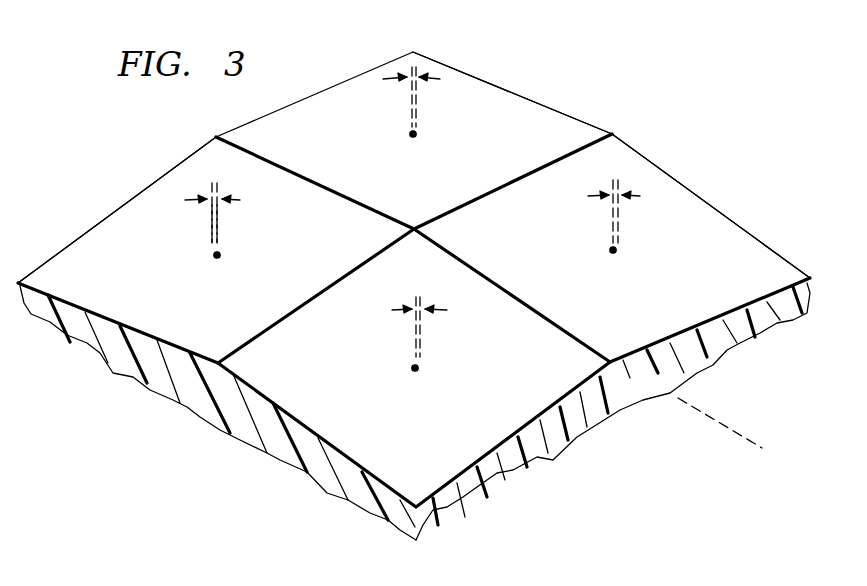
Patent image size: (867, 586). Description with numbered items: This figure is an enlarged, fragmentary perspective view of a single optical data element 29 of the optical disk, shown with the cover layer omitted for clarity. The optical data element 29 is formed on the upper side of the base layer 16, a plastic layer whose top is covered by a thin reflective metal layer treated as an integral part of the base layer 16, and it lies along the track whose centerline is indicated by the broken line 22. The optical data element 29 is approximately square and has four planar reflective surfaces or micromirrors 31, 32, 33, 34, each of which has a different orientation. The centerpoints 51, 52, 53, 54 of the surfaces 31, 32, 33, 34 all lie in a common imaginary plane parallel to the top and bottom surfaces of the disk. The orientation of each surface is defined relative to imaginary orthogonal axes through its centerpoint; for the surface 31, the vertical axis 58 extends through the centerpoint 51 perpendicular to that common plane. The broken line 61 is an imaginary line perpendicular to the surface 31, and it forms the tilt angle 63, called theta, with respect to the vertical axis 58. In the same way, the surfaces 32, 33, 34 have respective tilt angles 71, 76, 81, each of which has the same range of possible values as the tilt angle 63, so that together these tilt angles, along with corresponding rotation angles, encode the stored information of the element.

The base layer 16 is at (90, 342).
The track centerline 22 is at (716, 422).
The optical data element 29 is at (598, 72).
The reflective surface 31 is at (90, 246).
The reflective surface 32 is at (342, 446).
The reflective surface 33 is at (733, 226).
The reflective surface 34 is at (494, 86).
The centerpoint 51 is at (220, 257).
The centerpoint 52 is at (418, 370).
The centerpoint 53 is at (610, 252).
The centerpoint 54 is at (416, 137).
The vertical axis 58 is at (220, 213).
The perpendicular line 61 is at (210, 213).
The tilt angle 63 is at (214, 183).
The tilt angle 71 is at (416, 297).
The tilt angle 76 is at (615, 180).
The tilt angle 81 is at (412, 66).